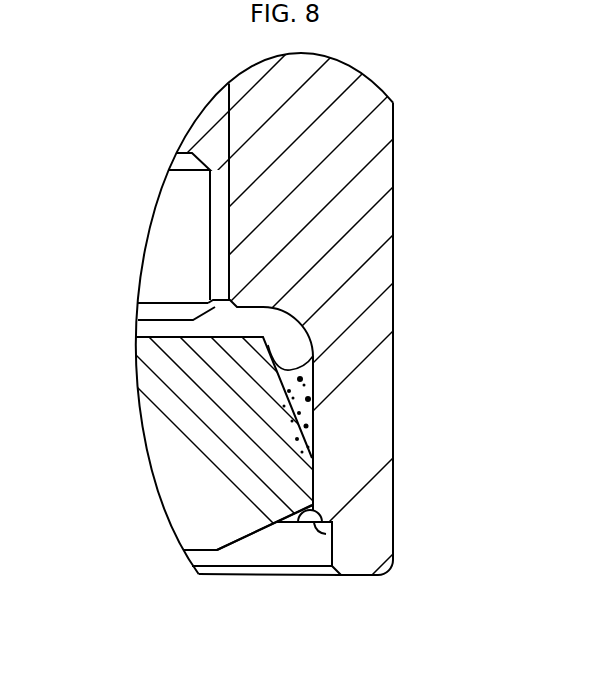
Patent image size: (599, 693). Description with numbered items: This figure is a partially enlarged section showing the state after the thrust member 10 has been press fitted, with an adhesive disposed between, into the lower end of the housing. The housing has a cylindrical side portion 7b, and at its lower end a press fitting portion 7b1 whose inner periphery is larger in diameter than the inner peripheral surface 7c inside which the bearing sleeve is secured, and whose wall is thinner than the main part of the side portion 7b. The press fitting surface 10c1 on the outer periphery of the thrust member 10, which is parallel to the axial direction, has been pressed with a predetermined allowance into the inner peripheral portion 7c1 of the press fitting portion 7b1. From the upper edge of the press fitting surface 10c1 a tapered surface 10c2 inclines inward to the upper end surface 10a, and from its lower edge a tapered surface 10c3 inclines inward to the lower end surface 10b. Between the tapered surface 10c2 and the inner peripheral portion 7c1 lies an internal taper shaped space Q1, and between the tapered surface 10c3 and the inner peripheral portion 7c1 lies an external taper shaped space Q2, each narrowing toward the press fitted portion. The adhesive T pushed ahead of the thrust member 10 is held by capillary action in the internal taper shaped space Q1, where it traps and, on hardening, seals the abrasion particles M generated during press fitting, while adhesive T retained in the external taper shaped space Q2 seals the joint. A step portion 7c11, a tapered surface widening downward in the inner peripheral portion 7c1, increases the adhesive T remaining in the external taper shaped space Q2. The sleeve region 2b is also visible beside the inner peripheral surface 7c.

The side portion 7b is at (372, 135).
The inner peripheral surface 7c is at (262, 223).
The sleeve portion 2b is at (163, 240).
The upper end surface 10a is at (170, 337).
The thrust member 10 is at (163, 368).
The internal taper shaped space Q1 is at (285, 397).
The external taper shaped space Q2 is at (287, 503).
The lower end surface 10b is at (188, 553).
The tapered surface 10c3 is at (243, 545).
The adhesive T is at (305, 400).
The tapered surface 10c2 is at (283, 324).
The abrasion particles M is at (313, 368).
The inner peripheral portion 7c1 is at (300, 455).
The press fitting portion 7b1 is at (368, 464).
The press fitting surface 10c1 is at (313, 497).
The step portion 7c11 is at (320, 533).